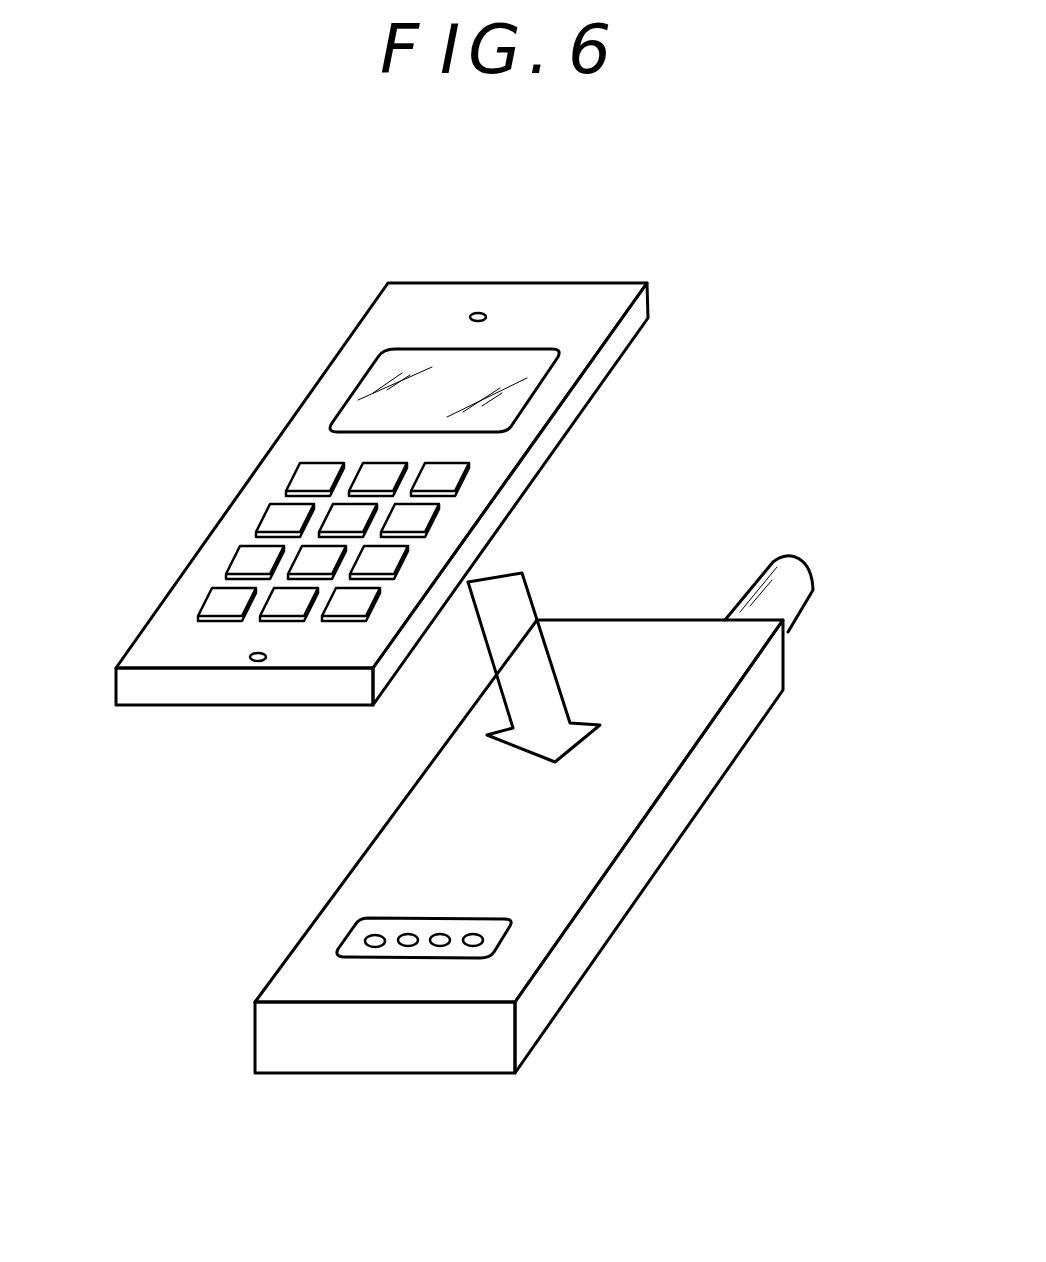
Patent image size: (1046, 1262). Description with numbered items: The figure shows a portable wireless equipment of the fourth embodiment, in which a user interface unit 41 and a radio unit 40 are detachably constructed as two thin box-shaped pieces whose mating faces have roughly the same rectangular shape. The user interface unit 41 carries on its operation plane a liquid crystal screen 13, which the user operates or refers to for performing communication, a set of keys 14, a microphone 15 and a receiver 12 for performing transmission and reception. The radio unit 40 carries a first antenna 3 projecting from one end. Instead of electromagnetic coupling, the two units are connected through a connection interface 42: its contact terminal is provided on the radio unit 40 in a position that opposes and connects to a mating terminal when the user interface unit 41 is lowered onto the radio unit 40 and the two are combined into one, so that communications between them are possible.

The first antenna 3 is at (807, 590).
The receiver 12 is at (478, 312).
The liquid crystal screen 13 is at (383, 363).
The keys 14 is at (263, 513).
The microphone 15 is at (250, 655).
The radio unit 40 is at (683, 747).
The user interface unit 41 is at (580, 347).
The connection interface 42 is at (512, 919).